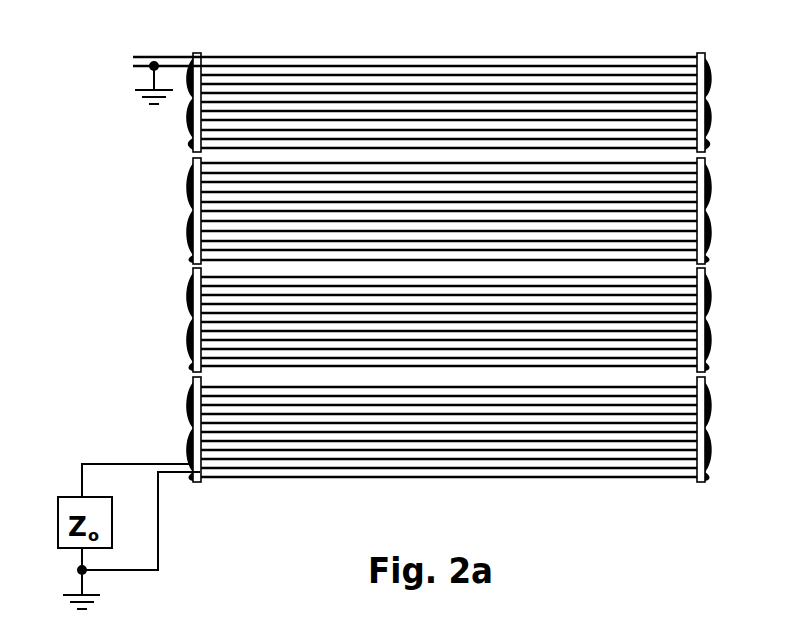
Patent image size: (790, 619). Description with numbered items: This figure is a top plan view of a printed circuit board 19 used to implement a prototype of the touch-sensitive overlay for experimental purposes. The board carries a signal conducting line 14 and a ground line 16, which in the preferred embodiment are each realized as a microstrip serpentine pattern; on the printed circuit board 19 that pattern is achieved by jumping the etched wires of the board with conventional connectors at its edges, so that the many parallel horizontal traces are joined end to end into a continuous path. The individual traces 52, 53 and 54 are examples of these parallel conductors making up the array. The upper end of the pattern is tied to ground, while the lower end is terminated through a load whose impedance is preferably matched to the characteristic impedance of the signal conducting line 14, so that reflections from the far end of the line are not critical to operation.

The printed circuit board 19 is at (100, 297).
The signal conducting line 14 is at (228, 55).
The ground line 16 is at (278, 63).
The conductor 52 is at (555, 63).
The conductor 53 is at (600, 78).
The conductor 54 is at (640, 100).